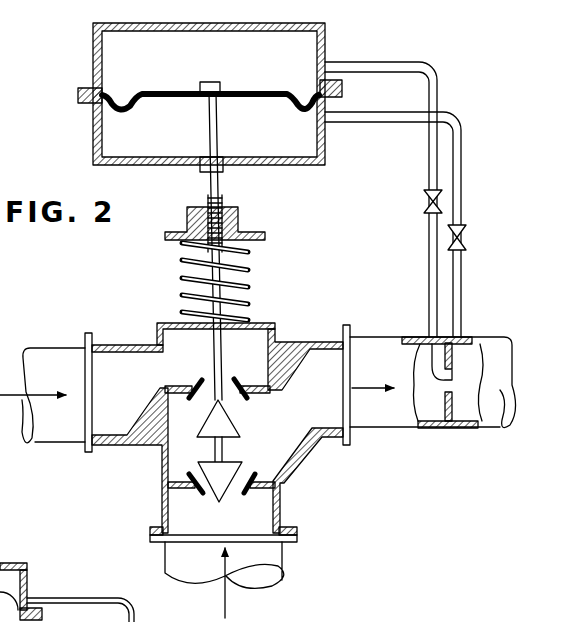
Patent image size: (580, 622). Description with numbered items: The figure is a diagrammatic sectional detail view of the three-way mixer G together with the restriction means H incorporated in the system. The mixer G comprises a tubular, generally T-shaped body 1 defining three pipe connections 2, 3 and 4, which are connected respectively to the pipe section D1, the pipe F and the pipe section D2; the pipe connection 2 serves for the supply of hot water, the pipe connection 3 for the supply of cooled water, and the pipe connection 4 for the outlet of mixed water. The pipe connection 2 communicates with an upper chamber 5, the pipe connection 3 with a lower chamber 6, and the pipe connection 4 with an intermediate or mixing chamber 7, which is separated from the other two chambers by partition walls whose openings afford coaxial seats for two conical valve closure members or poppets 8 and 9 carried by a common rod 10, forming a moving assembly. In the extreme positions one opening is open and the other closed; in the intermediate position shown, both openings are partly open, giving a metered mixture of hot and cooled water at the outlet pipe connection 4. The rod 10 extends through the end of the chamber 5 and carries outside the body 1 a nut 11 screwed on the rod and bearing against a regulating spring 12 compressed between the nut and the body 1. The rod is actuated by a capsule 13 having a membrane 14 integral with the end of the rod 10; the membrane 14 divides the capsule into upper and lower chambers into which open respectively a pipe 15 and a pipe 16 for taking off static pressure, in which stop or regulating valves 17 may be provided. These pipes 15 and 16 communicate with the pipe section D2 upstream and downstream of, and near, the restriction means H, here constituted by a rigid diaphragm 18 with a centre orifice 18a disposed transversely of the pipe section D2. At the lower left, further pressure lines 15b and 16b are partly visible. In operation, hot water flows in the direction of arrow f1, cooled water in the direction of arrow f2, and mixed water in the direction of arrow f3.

The body 1 is at (158, 326).
The pipe connection 2 is at (106, 344).
The pipe connection 3 is at (162, 513).
The pipe connection 4 is at (327, 438).
The upper chamber 5 is at (165, 377).
The lower chamber 6 is at (221, 498).
The intermediate or mixing chamber 7 is at (220, 410).
The conical valve closure member 8 is at (223, 426).
The conical valve closure member 9 is at (226, 490).
The rod 10 is at (219, 363).
The nut 11 is at (238, 216).
The regulating spring 12 is at (250, 268).
The capsule 13 is at (94, 64).
The membrane 14 is at (150, 98).
The pipe 15 is at (382, 62).
The pipe 16 is at (462, 143).
The stop valves or regulating valves 17 is at (465, 224).
The rigid diaphragm 18 is at (452, 407).
The centre orifice 18a is at (432, 356).
The pressure line 15b is at (88, 598).
The pressure line 16b is at (79, 621).
The pipe section D1 is at (45, 346).
The pipe section D2 is at (493, 336).
The pipe F is at (290, 560).
The three-way mixer G is at (160, 465).
The restriction means H is at (438, 403).
The arrow f1 is at (33, 382).
The arrow f2 is at (237, 583).
The arrow f3 is at (373, 376).